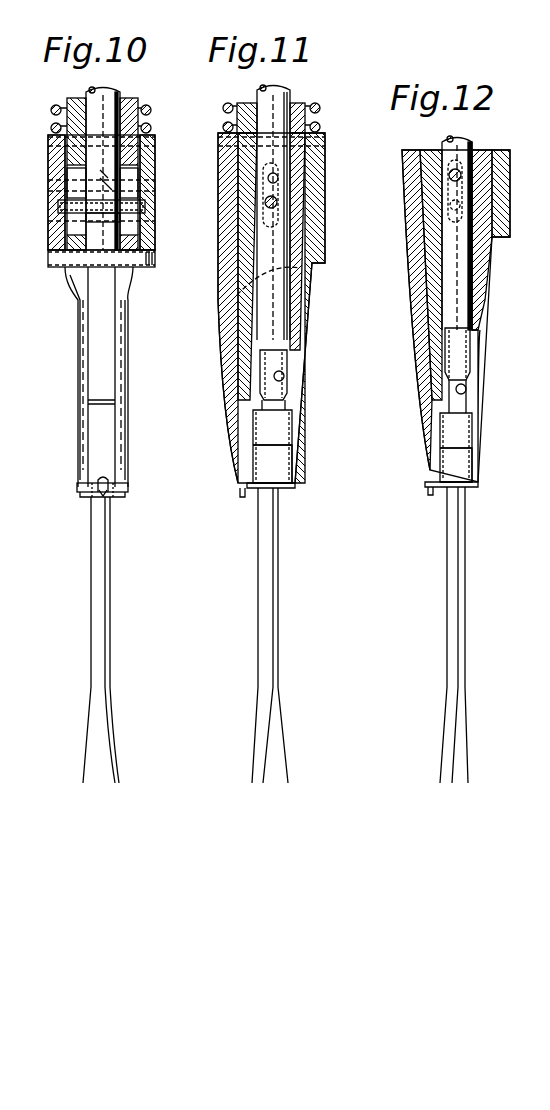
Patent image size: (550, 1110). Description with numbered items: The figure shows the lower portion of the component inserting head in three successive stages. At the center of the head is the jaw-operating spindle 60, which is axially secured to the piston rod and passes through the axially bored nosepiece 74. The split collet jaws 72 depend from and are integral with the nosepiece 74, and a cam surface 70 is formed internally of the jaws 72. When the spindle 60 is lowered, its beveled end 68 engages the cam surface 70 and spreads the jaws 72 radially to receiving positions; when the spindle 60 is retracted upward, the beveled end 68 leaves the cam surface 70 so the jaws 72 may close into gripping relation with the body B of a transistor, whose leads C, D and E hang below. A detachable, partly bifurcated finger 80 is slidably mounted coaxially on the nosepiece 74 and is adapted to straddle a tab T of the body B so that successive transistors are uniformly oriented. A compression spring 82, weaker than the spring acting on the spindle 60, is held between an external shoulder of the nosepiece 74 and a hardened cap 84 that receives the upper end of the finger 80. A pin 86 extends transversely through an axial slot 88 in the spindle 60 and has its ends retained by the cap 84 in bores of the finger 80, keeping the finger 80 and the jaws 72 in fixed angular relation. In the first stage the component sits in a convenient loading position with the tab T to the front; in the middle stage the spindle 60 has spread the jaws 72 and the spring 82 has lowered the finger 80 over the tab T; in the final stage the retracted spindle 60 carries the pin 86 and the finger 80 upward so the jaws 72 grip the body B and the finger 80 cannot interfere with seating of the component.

In FIG. 10, the jaw-operating spindle 60 is at (102, 88).
In FIG. 11, the jaw-operating spindle 60 is at (278, 318).
In FIG. 12, the jaw-operating spindle 60 is at (447, 139).
In FIG. 10, the nosepiece 74 is at (133, 102).
In FIG. 11, the nosepiece 74 is at (292, 105).
In FIG. 12, the nosepiece 74 is at (494, 255).
In FIG. 10, the compression spring 82 is at (152, 128).
In FIG. 11, the compression spring 82 is at (320, 108).
In FIG. 10, the hardened cap 84 is at (150, 157).
In FIG. 11, the hardened cap 84 is at (325, 152).
In FIG. 12, the hardened cap 84 is at (456, 316).
In FIG. 10, the axial slot 88 is at (118, 178).
In FIG. 11, the axial slot 88 is at (279, 178).
In FIG. 12, the axial slot 88 is at (448, 210).
In FIG. 10, the pin 86 is at (140, 213).
In FIG. 11, the pin 86 is at (278, 205).
In FIG. 12, the pin 86 is at (462, 172).
In FIG. 10, the finger 80 is at (92, 347).
In FIG. 11, the finger 80 is at (232, 385).
In FIG. 12, the finger 80 is at (422, 395).
In FIG. 10, the split collet jaws 72 is at (128, 437).
In FIG. 11, the split collet jaws 72 is at (296, 440).
In FIG. 12, the split collet jaws 72 is at (432, 477).
In FIG. 11, the beveled end 68 is at (286, 362).
In FIG. 12, the beveled end 68 is at (470, 335).
In FIG. 11, the cam surface 70 is at (284, 378).
In FIG. 12, the cam surface 70 is at (466, 391).
In FIG. 11, the transistor body B is at (285, 465).
In FIG. 12, the transistor body B is at (470, 469).
In FIG. 10, the tab T is at (106, 494).
In FIG. 11, the tab T is at (240, 489).
In FIG. 12, the tab T is at (430, 490).
In FIG. 11, the lead C is at (258, 700).
In FIG. 11, the lead D is at (280, 695).
In FIG. 11, the lead E is at (270, 730).